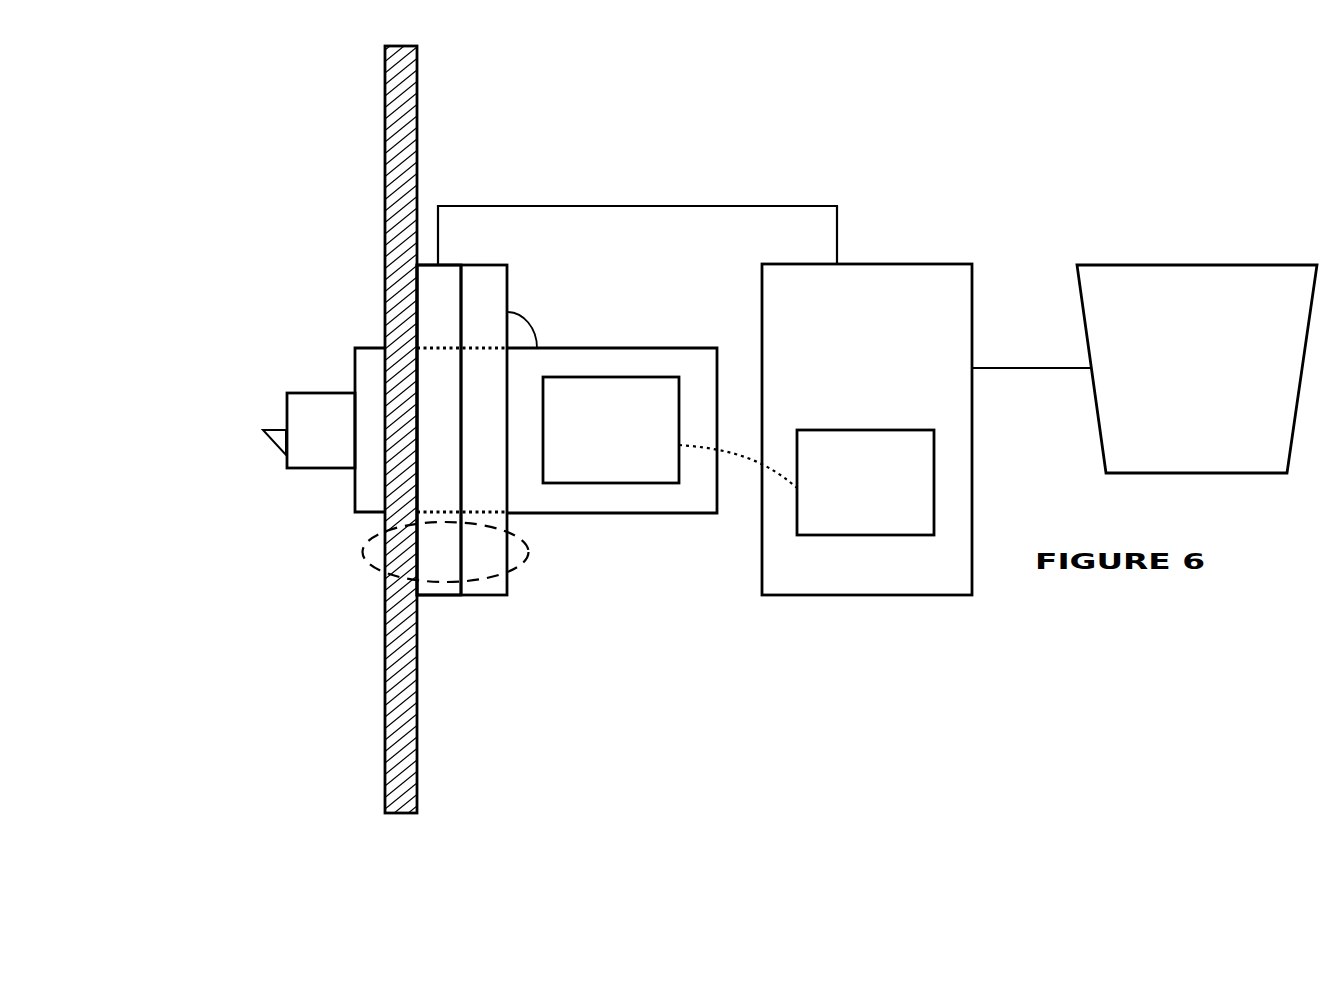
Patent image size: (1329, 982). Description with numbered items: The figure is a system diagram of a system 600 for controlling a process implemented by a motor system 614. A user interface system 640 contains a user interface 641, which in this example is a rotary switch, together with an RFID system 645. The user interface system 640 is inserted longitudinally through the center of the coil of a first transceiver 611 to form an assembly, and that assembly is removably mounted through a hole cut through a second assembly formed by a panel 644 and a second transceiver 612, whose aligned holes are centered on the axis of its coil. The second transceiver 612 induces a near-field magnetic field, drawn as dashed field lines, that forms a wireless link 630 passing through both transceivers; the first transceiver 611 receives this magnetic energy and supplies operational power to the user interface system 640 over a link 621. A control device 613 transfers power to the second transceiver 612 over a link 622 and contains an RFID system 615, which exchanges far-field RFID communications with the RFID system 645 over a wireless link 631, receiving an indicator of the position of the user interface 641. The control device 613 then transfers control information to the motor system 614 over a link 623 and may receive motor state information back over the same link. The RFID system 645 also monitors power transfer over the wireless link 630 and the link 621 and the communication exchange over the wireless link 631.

The system 600 is at (1084, 152).
The first transceiver 611 is at (483, 597).
The second transceiver 612 is at (437, 597).
The control device 613 is at (847, 387).
The motor system 614 is at (1177, 411).
The RFID system 615 is at (846, 524).
The link 621 is at (522, 312).
The link 622 is at (725, 205).
The link 623 is at (997, 368).
The wireless link 630 is at (527, 550).
The wireless link 631 is at (747, 460).
The user interface system 640 is at (353, 495).
The user interface 641 is at (272, 441).
The panel 644 is at (417, 167).
The RFID system 645 is at (591, 472).